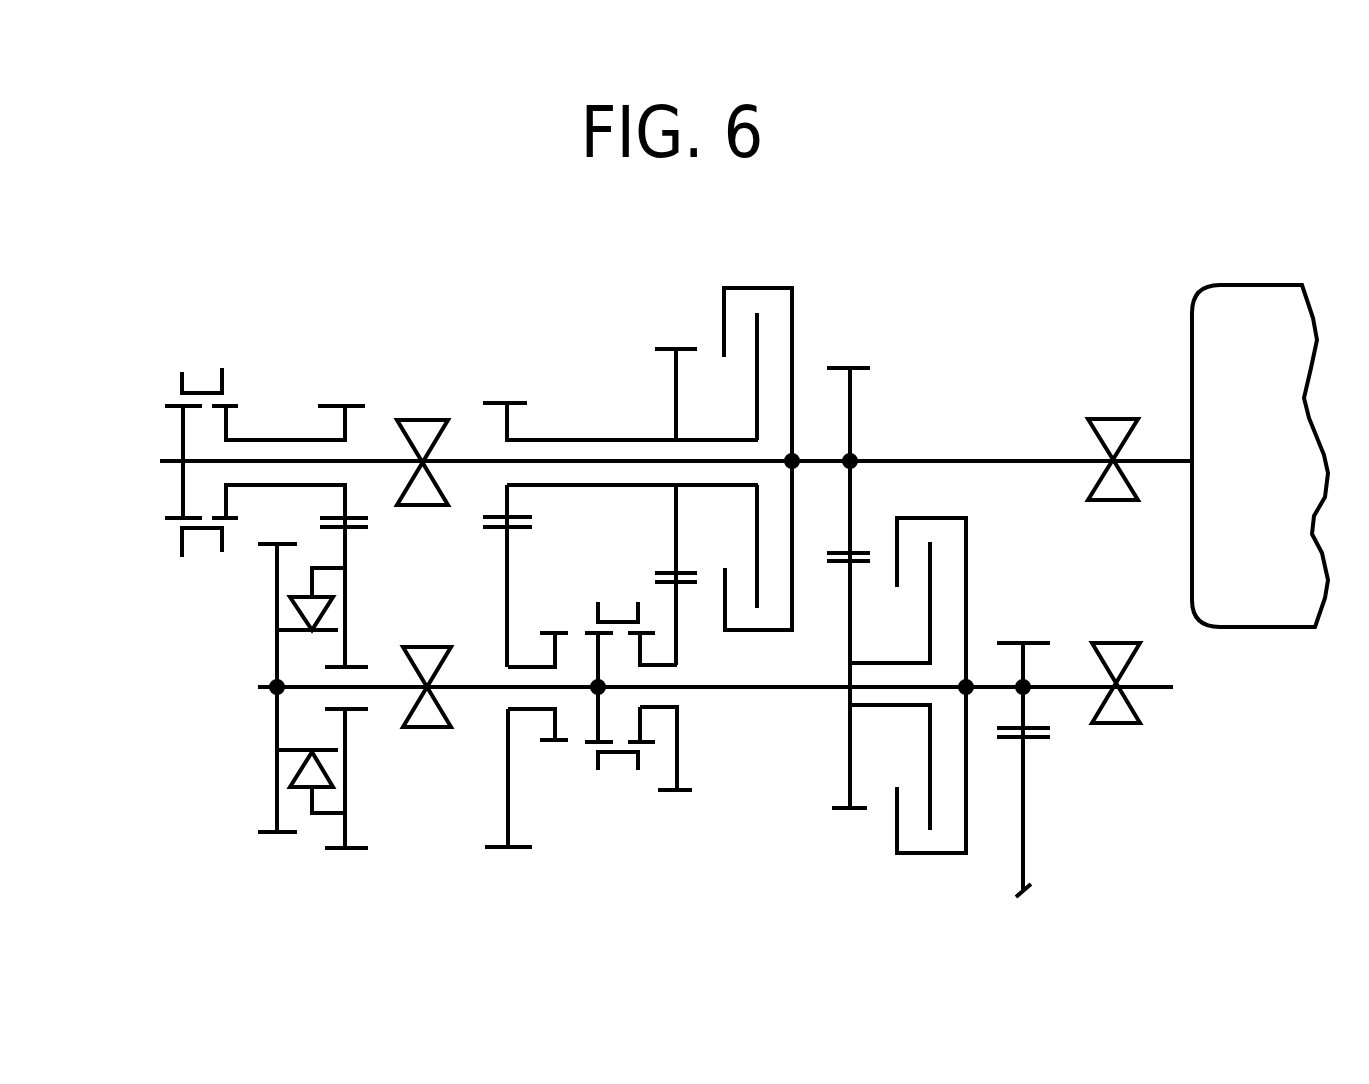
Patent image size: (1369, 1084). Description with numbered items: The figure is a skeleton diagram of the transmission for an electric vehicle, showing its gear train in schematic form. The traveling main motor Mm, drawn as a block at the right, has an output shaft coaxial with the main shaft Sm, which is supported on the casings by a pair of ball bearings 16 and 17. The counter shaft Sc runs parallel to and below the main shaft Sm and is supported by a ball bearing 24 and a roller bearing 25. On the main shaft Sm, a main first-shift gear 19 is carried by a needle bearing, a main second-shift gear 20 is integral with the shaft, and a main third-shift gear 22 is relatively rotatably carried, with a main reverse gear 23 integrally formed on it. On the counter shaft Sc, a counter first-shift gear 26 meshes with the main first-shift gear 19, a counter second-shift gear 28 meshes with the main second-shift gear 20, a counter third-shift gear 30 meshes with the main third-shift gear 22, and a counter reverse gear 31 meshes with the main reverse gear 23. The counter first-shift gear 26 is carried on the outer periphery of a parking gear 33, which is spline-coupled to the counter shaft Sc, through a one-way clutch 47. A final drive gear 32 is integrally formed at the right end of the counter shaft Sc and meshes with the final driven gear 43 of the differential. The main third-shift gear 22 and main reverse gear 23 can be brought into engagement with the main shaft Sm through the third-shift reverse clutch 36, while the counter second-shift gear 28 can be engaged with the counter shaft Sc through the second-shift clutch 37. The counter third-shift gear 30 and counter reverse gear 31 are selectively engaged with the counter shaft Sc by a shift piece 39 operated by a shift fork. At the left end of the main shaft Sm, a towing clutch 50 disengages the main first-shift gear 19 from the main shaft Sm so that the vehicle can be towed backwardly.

The ball bearing 16 is at (413, 420).
The ball bearing 17 is at (1114, 419).
The main first-shift gear 19 is at (350, 405).
The main second-shift gear 20 is at (866, 368).
The main third-shift gear 22 is at (667, 349).
The main reverse gear 23 is at (517, 403).
The ball bearing 24 is at (433, 728).
The roller bearing 25 is at (1120, 724).
The counter first-shift gear 26 is at (360, 849).
The counter second-shift gear 28 is at (838, 810).
The counter third-shift gear 30 is at (690, 793).
The counter reverse gear 31 is at (522, 849).
The final drive gear 32 is at (1040, 643).
The parking gear 33 is at (268, 835).
The third-shift reverse clutch 36 is at (788, 286).
The second-shift clutch 37 is at (975, 546).
The shift piece 39 is at (623, 772).
The final driven gear 43 is at (1040, 738).
The one-way clutch 47 is at (322, 614).
The towing clutch 50 is at (196, 372).
The main shaft Sm is at (1007, 456).
The counter shaft Sc is at (773, 688).
The main motor Mm is at (1238, 491).